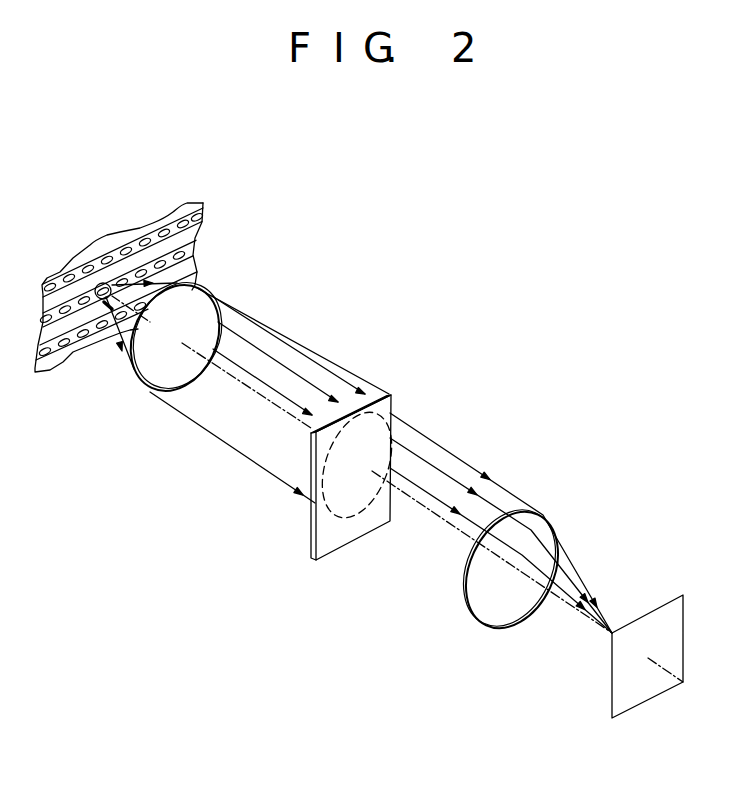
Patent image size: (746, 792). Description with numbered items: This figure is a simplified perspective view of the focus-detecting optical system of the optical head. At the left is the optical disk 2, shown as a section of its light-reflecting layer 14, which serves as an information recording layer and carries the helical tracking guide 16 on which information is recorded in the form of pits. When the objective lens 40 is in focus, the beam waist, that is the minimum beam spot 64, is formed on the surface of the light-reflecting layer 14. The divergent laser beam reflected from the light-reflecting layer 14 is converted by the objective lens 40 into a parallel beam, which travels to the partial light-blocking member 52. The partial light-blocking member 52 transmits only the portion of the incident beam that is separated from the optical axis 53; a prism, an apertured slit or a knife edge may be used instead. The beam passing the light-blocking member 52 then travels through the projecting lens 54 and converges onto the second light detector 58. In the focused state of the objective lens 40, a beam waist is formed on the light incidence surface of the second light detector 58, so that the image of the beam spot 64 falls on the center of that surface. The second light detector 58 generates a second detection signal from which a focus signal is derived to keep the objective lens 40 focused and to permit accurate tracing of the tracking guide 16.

The optical disk 2 is at (187, 263).
The light-reflecting layer 14 is at (187, 202).
The tracking guide 16 is at (50, 273).
The beam spot 64 is at (108, 283).
The objective lens 40 is at (208, 290).
The partial light-blocking member 52 is at (312, 537).
The optical axis 53 is at (448, 521).
The projecting lens 54 is at (542, 512).
The second light detector 58 is at (647, 623).